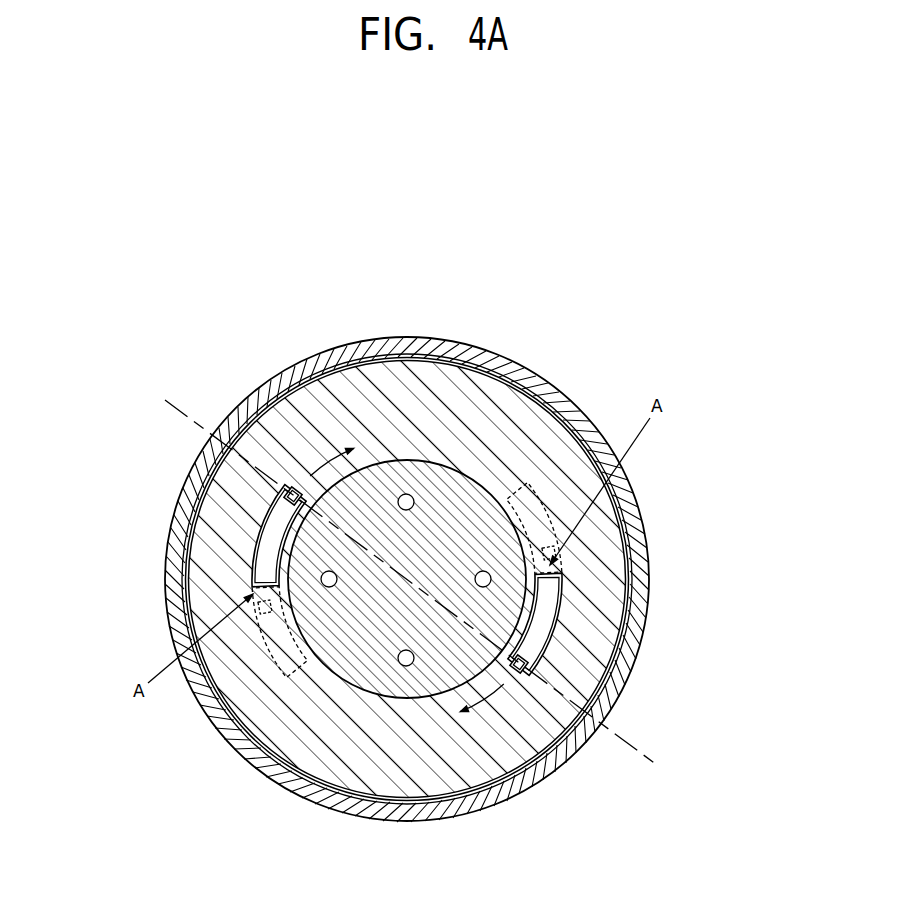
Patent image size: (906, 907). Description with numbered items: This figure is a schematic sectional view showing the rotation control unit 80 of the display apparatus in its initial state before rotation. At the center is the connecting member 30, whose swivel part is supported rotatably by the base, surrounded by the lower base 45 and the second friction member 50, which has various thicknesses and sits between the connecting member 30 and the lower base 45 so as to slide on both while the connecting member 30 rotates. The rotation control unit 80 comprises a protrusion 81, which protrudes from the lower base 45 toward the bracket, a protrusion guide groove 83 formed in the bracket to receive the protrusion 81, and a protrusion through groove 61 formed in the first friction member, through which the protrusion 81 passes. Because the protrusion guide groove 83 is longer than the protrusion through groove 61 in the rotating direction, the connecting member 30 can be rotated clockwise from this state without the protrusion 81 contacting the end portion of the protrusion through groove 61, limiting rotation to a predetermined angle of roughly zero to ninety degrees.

The connecting member 30 is at (416, 687).
The lower base 45 is at (622, 514).
The second friction member 50 is at (604, 478).
The protrusion through groove 61 is at (258, 550).
The rotation control unit 80 is at (409, 580).
The protrusion 81 is at (288, 492).
The protrusion guide groove 83 is at (252, 597).